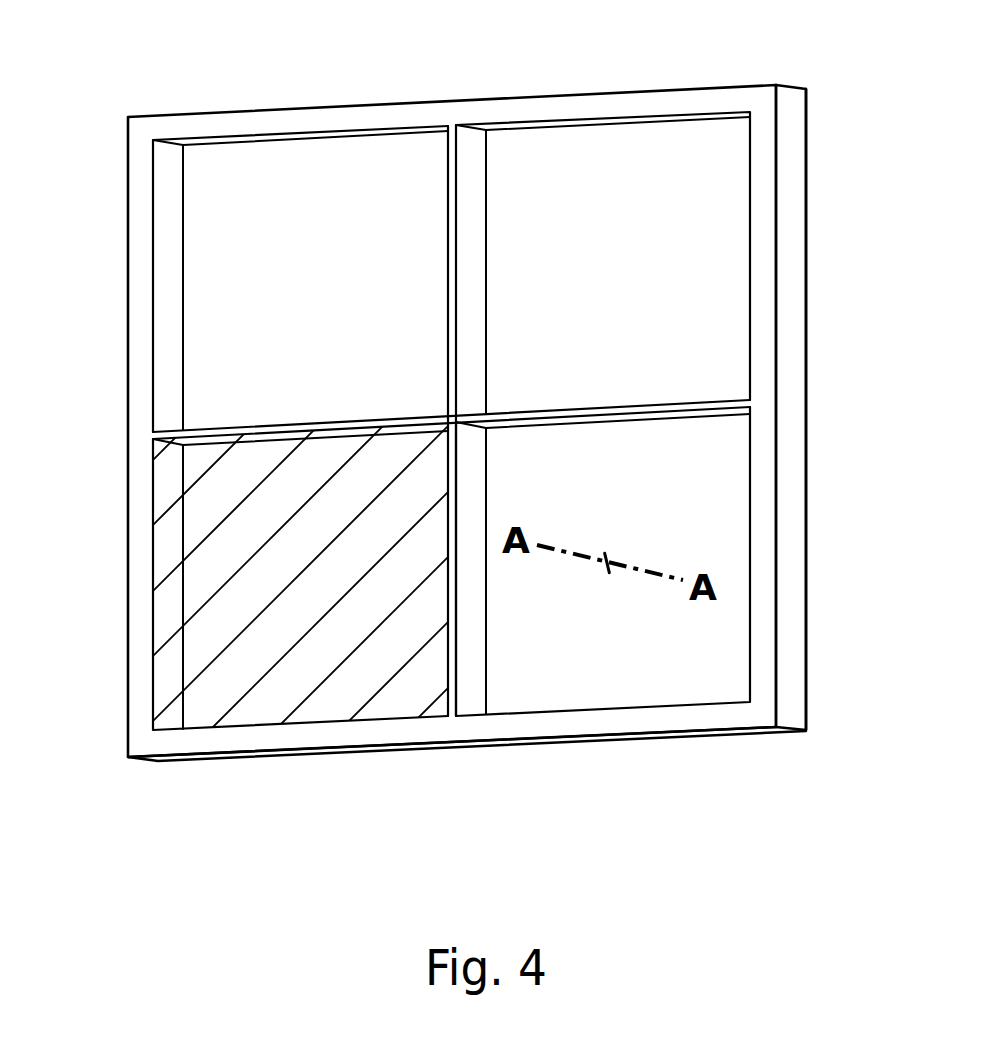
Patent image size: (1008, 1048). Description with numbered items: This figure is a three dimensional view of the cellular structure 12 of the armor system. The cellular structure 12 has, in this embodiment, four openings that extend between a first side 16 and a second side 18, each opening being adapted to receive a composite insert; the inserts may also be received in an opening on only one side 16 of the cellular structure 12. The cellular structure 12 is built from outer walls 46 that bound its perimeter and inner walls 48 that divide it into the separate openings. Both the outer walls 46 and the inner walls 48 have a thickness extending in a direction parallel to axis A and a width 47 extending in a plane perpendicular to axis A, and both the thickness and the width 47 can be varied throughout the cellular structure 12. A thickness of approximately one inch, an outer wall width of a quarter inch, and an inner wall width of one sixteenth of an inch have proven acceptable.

The cellular structure 12 is at (555, 110).
The first side 16 is at (140, 728).
The second side 18 is at (806, 677).
The outer walls 46 is at (792, 618).
The width 47 is at (142, 438).
The inner walls 48 is at (567, 423).